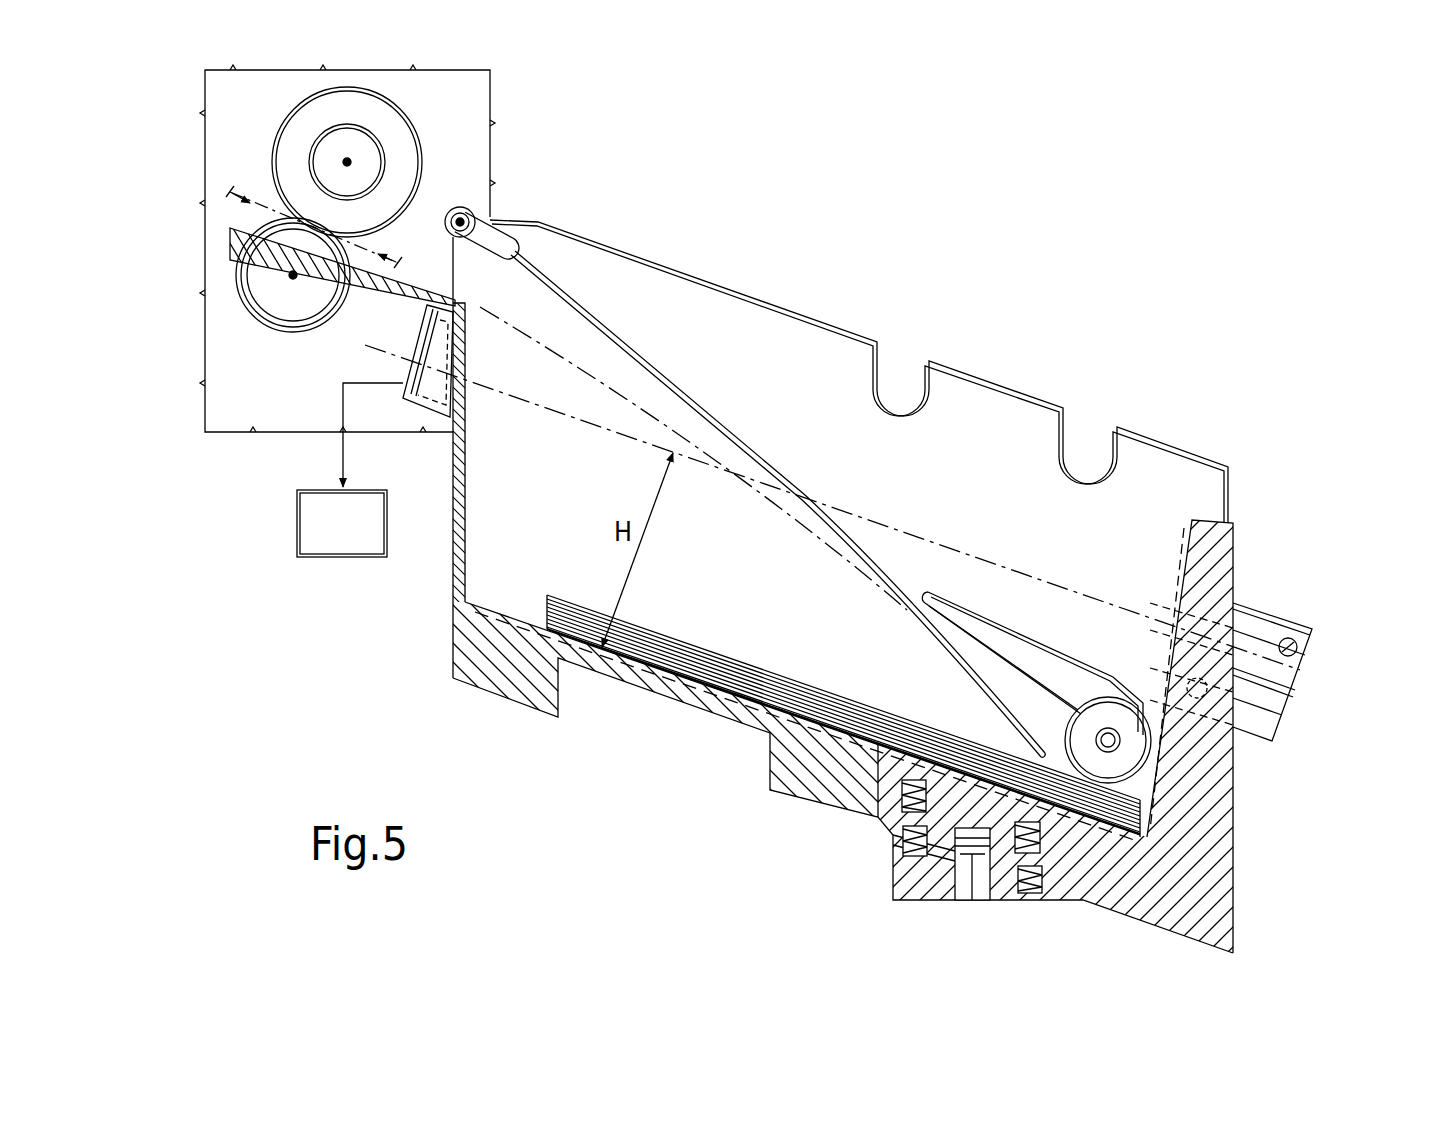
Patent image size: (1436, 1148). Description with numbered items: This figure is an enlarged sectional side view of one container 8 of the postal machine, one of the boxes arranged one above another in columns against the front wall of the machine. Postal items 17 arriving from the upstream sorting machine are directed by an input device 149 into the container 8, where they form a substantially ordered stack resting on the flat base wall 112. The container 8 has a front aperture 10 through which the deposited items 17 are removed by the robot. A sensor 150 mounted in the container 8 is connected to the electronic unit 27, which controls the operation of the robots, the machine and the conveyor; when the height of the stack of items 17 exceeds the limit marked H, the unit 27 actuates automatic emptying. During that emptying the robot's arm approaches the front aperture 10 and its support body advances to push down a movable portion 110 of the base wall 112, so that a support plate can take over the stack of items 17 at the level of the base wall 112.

The container 8 is at (914, 314).
The front aperture 10 is at (470, 474).
The postal items 17 is at (230, 200).
The electronic unit 27 is at (325, 508).
The movable portion 110 is at (878, 790).
The flat base wall 112 is at (672, 682).
The input device 149 is at (247, 175).
The sensor 150 is at (1250, 592).